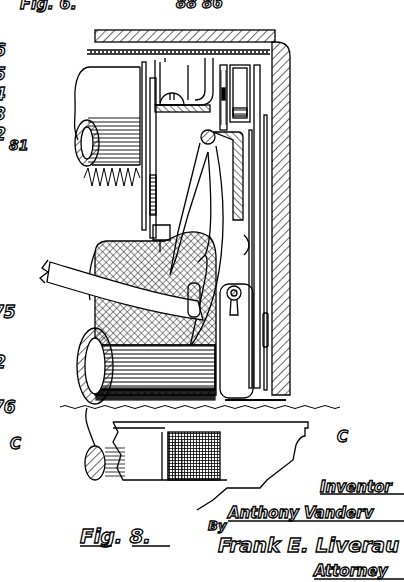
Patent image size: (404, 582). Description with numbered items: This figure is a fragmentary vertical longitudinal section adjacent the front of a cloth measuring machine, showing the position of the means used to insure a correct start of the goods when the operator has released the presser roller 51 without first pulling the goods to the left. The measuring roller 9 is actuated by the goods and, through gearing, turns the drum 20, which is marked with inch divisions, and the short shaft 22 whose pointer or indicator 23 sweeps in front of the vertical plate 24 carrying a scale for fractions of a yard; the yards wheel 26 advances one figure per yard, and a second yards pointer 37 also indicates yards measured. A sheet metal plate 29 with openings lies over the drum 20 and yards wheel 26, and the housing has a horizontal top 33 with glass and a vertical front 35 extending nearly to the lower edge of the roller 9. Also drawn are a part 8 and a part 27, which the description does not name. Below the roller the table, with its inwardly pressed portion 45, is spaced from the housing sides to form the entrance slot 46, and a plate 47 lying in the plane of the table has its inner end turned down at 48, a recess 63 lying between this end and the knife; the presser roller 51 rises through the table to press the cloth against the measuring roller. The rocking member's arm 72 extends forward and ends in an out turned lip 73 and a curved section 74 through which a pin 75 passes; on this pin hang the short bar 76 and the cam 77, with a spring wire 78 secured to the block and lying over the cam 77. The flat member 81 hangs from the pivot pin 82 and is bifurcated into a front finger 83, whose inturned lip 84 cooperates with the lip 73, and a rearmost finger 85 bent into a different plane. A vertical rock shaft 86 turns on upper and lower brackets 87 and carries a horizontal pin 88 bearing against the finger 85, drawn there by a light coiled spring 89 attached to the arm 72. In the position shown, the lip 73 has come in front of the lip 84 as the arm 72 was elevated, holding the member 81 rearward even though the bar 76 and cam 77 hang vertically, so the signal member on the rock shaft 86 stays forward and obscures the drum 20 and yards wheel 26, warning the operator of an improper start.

The arm 8 is at (242, 168).
The measuring roller 9 is at (96, 262).
The drum 20 is at (165, 72).
The short shaft 22 is at (196, 245).
The pointer or indicator 23 is at (266, 124).
The vertical plate 24 is at (260, 91).
The yards wheel 26 is at (247, 77).
The bobbin 27 is at (88, 84).
The sheet metal plate 29 is at (253, 53).
The horizontal top 33 is at (210, 43).
The vertical front 35 is at (287, 141).
The yards pointer 37 is at (268, 326).
The inwardly pressed portion 45 is at (212, 470).
The entrance slot 46 is at (334, 429).
The plate 47 is at (250, 430).
The downwardly turned end 48 is at (162, 448).
The presser roller 51 is at (105, 472).
The recess 63 is at (137, 434).
The arm 72 is at (45, 284).
The out turned lip 73 is at (228, 314).
The curved section 74 is at (232, 259).
The pin 75 is at (241, 299).
The short bar 76 is at (247, 366).
The cam 77 is at (262, 319).
The spring wire 78 is at (250, 279).
The member 81 is at (253, 179).
The pivot pin 82 is at (215, 142).
The front finger 83 is at (215, 254).
The inturned lip 84 is at (188, 301).
The rearmost finger 85 is at (152, 198).
The vertical rock shaft 86 is at (170, 122).
The brackets 87 is at (170, 110).
The horizontal pin 88 is at (160, 238).
The coiled spring 89 is at (84, 180).